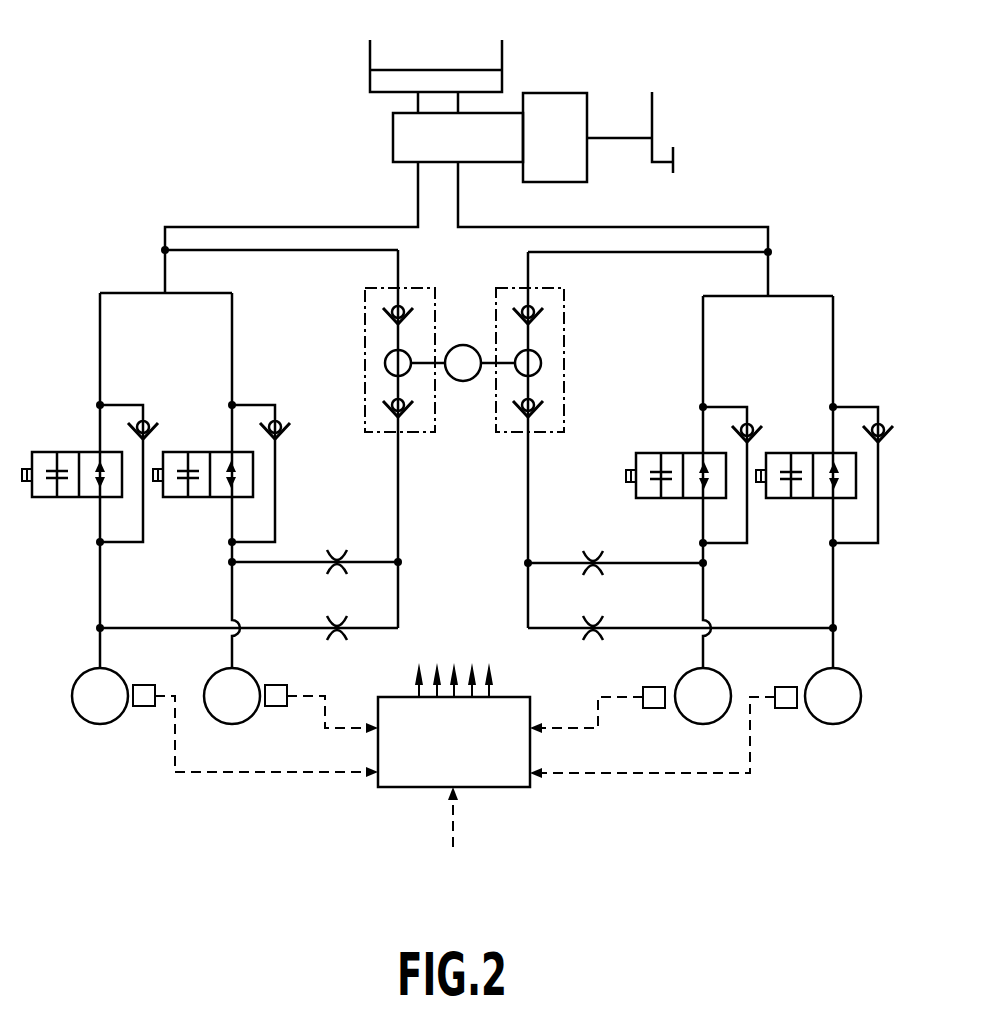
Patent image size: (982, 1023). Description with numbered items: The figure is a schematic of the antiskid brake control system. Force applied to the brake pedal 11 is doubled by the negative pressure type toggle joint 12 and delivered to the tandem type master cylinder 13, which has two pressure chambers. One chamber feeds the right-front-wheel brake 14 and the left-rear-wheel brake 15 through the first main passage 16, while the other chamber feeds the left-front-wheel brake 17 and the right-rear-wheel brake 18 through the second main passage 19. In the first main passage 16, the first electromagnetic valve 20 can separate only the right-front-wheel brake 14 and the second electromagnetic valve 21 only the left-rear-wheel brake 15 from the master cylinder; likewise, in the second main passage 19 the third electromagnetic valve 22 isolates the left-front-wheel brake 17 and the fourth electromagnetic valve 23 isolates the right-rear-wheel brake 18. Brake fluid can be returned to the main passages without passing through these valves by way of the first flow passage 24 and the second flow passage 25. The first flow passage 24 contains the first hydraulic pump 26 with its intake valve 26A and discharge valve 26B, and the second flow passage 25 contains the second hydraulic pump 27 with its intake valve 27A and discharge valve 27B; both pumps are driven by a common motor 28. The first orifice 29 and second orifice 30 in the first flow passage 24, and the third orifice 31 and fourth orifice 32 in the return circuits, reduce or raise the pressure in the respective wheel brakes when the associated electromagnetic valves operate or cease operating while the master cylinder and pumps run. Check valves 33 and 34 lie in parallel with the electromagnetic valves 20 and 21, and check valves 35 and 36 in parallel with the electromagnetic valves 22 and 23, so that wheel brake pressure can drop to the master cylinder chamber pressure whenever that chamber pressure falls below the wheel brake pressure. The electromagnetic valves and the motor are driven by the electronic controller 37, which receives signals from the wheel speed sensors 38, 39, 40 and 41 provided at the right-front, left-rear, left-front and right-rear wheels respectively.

The brake pedal 11 is at (652, 111).
The negative pressure type toggle joint 12 is at (561, 93).
The tandem type master cylinder 13 is at (393, 144).
The right-front-wheel brake 14 is at (840, 725).
The left-rear-wheel brake 15 is at (718, 678).
The first main passage 16 is at (738, 227).
The left-front-wheel brake 17 is at (103, 724).
The right-rear-wheel brake 18 is at (250, 678).
The second main passage 19 is at (221, 227).
The first electromagnetic valve 20 is at (788, 452).
The second electromagnetic valve 21 is at (676, 444).
The third electromagnetic valve 22 is at (72, 452).
The fourth electromagnetic valve 23 is at (205, 452).
The first flow passage 24 is at (527, 527).
The second flow passage 25 is at (398, 490).
The first hydraulic pump 26 is at (566, 346).
The intake valve 26A is at (540, 407).
The discharge valve 26B is at (540, 308).
The second hydraulic pump 27 is at (365, 345).
The intake valve 27A is at (393, 410).
The discharge valve 27B is at (392, 308).
The common motor 28 is at (457, 345).
The first orifice 29 is at (590, 645).
The second orifice 30 is at (595, 555).
The third orifice 31 is at (338, 645).
The fourth orifice 32 is at (334, 556).
The check valve 33 is at (886, 427).
The check valve 34 is at (748, 425).
The check valve 35 is at (148, 420).
The check valve 36 is at (282, 420).
The electronic controller 37 is at (510, 789).
The wheel speed sensor 38 is at (786, 709).
The wheel speed sensor 39 is at (653, 709).
The wheel speed sensor 40 is at (145, 707).
The wheel speed sensor 41 is at (274, 707).